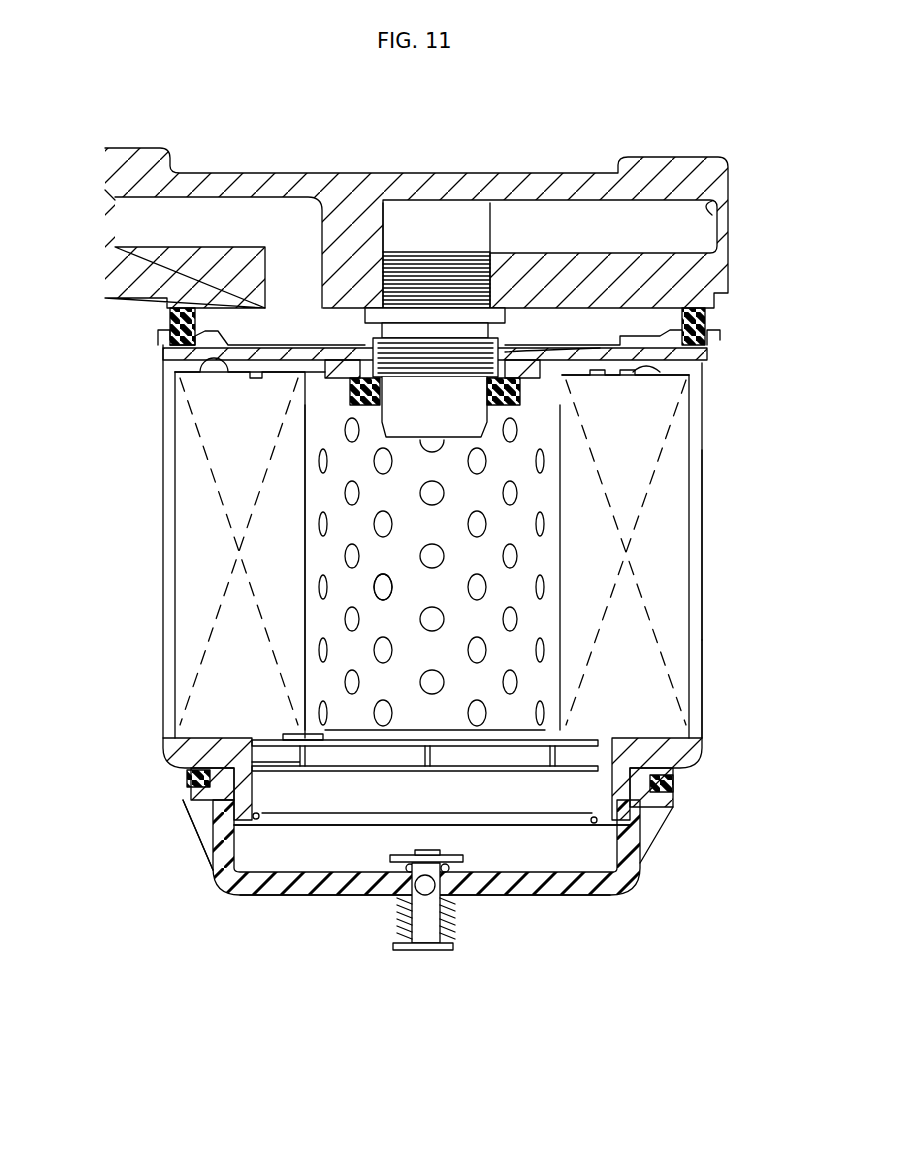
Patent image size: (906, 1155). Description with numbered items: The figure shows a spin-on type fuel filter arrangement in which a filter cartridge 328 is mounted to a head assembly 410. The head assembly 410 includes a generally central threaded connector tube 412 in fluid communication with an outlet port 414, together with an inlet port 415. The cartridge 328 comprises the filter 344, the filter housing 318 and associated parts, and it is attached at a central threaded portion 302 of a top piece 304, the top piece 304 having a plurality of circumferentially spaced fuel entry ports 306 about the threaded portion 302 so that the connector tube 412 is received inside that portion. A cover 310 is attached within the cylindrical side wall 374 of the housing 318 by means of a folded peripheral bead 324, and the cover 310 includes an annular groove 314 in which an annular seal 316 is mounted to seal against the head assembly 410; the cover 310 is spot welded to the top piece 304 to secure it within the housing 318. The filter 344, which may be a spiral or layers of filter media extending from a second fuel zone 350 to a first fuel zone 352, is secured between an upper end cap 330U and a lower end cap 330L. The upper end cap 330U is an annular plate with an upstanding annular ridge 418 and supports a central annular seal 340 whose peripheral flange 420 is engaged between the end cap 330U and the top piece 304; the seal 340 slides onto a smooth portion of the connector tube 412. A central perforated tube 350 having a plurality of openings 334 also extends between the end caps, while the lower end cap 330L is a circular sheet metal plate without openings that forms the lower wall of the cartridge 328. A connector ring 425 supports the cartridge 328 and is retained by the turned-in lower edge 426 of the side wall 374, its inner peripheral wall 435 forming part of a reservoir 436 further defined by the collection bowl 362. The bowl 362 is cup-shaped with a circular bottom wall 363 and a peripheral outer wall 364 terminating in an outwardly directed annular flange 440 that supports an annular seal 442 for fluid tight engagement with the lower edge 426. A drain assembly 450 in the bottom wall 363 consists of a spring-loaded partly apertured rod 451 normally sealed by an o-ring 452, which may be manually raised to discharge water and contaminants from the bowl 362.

The head assembly 410 is at (242, 168).
The threaded connector tube 412 is at (447, 248).
The outlet port 414 is at (716, 203).
The inlet port 415 is at (112, 212).
The annular groove 314 is at (168, 318).
The folded peripheral bead 324 is at (158, 340).
The central threaded portion 302 is at (495, 342).
The fuel entry ports 306 is at (545, 348).
The cover 310 is at (634, 338).
The annular seal 316 is at (707, 322).
The top piece 304 is at (678, 368).
The central annular seal 340 is at (352, 392).
The filter cartridge 328 is at (176, 413).
The peripheral flange 420 is at (545, 378).
The upstanding annular ridge 418 is at (640, 373).
The upper end cap 330U is at (612, 380).
The filter housing 318 is at (704, 452).
The filter 344 is at (690, 502).
The first fuel zone 352 is at (704, 556).
The central perforated tube 350 is at (452, 597).
The openings 334 is at (370, 585).
The cylindrical side wall 374 is at (704, 670).
The lower end cap 330L is at (218, 740).
The turned-in lower edge 426 is at (702, 752).
The connector ring 425 is at (190, 782).
The inner peripheral wall 435 is at (598, 797).
The annular seal 442 is at (673, 784).
The outwardly directed annular flange 440 is at (673, 812).
The peripheral outer wall 364 is at (218, 846).
The reservoir 436 is at (338, 857).
The o-ring 452 is at (460, 862).
The collection bowl 362 is at (225, 896).
The bottom wall 363 is at (345, 896).
The spring-loaded partly apertured rod 451 is at (415, 956).
The drain assembly 450 is at (436, 938).